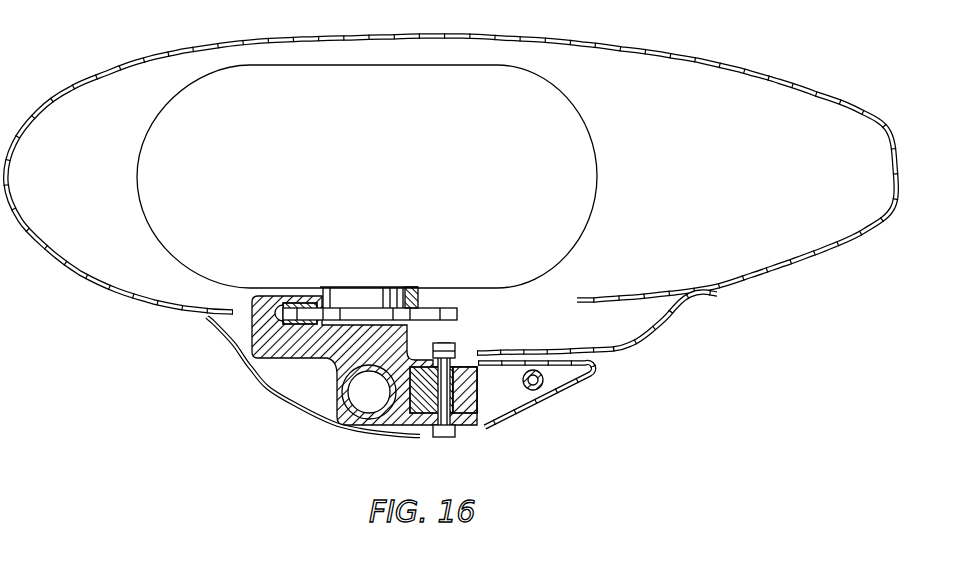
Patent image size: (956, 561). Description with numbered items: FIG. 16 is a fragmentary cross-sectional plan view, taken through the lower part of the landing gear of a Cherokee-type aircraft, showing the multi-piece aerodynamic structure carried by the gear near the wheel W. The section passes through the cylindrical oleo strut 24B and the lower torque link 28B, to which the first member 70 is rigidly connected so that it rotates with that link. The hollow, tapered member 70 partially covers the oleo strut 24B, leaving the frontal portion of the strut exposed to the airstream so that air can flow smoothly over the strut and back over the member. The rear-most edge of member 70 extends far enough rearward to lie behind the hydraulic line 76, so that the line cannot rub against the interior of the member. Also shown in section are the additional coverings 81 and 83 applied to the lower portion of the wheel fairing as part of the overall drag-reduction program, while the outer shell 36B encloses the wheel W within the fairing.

The mirror housing shell 36B is at (787, 80).
The wheel W is at (550, 190).
The covering 81 is at (272, 400).
The oleo strut 24B is at (343, 424).
The lower torque link 28B is at (483, 372).
The covering 83 is at (672, 318).
The first member 70 is at (575, 387).
The hydraulic line 76 is at (537, 389).